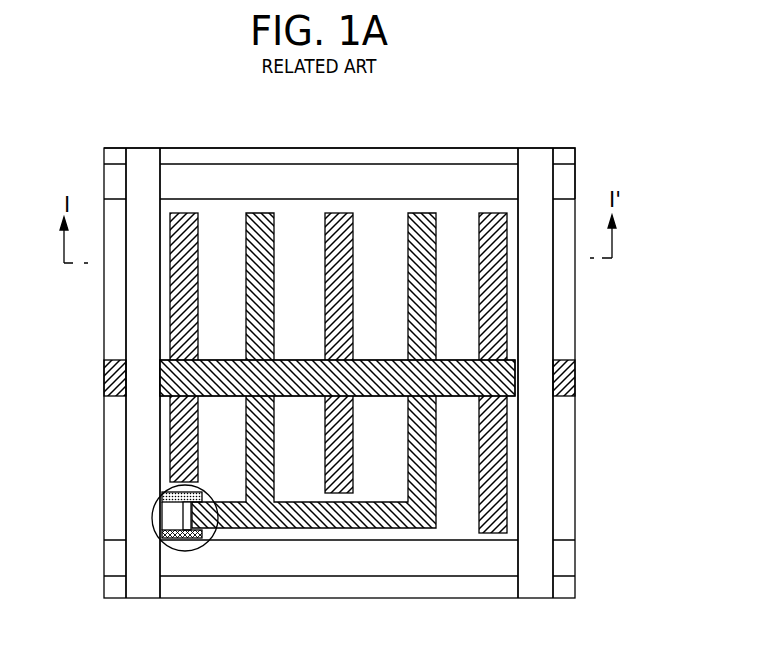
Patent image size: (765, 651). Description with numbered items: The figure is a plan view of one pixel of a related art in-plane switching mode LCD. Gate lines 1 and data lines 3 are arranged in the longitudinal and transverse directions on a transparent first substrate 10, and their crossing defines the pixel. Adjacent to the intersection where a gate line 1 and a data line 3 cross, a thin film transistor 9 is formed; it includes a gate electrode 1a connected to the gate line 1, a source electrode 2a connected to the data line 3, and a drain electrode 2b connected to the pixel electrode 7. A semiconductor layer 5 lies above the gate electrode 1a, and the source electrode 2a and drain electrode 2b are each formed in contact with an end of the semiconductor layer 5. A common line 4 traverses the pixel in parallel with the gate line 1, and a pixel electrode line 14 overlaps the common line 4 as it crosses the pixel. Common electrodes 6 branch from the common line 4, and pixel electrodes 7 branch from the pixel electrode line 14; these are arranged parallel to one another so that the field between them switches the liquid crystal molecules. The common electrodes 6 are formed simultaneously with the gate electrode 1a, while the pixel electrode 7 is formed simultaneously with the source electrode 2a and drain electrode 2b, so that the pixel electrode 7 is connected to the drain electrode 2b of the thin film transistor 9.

The gate line 1 is at (565, 166).
The gate electrode 1a is at (165, 489).
The source electrode 2a is at (171, 512).
The drain electrode 2b is at (201, 539).
The data line 3 is at (133, 423).
The common line 4 is at (104, 373).
The semiconductor layer 5 is at (188, 540).
The common electrode 6 is at (494, 215).
The pixel electrode 7 is at (421, 215).
The thin film transistor 9 is at (151, 527).
The first substrate 10 is at (590, 163).
The pixel electrode line 14 is at (500, 377).